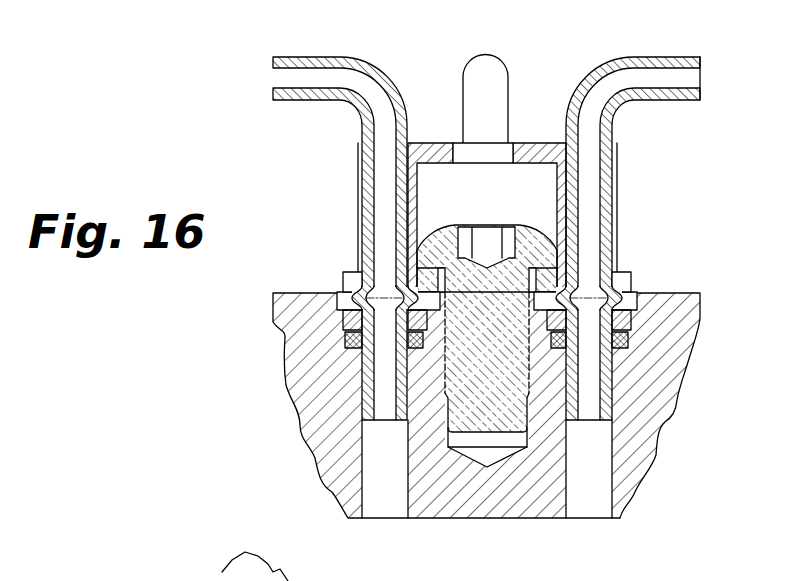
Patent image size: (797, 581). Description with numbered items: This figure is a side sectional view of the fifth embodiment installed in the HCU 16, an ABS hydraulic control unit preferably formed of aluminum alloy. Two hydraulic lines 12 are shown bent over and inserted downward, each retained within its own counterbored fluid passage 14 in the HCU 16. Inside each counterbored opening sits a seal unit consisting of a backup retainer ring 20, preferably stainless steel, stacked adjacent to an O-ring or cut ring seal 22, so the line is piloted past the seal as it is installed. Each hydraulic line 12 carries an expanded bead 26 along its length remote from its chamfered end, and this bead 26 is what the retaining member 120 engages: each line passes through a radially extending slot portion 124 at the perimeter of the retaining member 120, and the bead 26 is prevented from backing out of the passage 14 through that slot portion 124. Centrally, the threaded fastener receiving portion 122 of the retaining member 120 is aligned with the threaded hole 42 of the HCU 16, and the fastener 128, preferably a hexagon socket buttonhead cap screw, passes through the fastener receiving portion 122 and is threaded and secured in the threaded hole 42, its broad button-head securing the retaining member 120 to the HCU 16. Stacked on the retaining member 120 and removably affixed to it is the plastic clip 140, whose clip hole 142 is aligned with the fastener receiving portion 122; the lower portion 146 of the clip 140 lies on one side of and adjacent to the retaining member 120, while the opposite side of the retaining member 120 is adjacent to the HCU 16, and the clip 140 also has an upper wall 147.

The hydraulic line 12 is at (313, 57).
The fluid passage 14 is at (600, 502).
The HCU 16 is at (337, 432).
The backup retainer ring 20 is at (347, 316).
The O-ring or cut ring seal 22 is at (345, 334).
The expanded bead 26 is at (365, 296).
The threaded hole 42 is at (482, 443).
The retaining member 120 is at (622, 270).
The fastener receiving portion 122 is at (533, 280).
The slot portion 124 is at (360, 283).
The fastener 128 is at (443, 228).
The clip 140 is at (427, 142).
The clip hole 142 is at (493, 148).
The lower portion 146 is at (357, 177).
The upper wall 147 is at (545, 147).